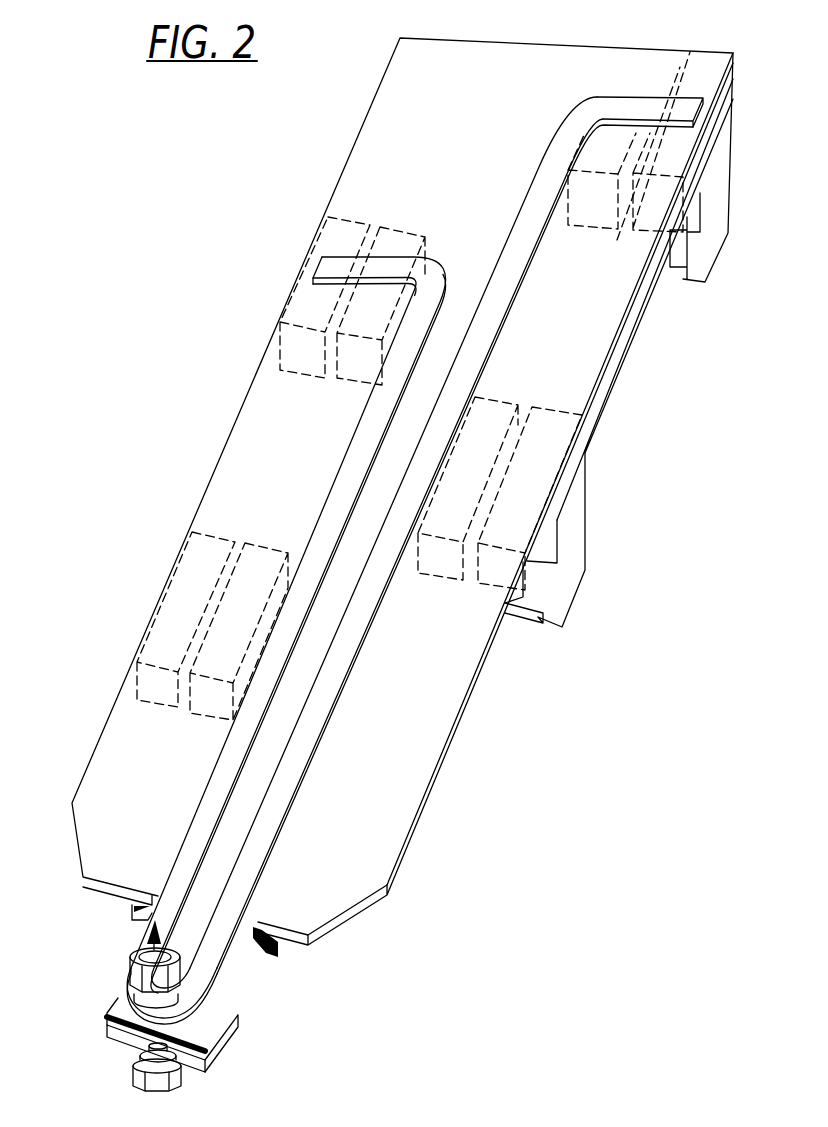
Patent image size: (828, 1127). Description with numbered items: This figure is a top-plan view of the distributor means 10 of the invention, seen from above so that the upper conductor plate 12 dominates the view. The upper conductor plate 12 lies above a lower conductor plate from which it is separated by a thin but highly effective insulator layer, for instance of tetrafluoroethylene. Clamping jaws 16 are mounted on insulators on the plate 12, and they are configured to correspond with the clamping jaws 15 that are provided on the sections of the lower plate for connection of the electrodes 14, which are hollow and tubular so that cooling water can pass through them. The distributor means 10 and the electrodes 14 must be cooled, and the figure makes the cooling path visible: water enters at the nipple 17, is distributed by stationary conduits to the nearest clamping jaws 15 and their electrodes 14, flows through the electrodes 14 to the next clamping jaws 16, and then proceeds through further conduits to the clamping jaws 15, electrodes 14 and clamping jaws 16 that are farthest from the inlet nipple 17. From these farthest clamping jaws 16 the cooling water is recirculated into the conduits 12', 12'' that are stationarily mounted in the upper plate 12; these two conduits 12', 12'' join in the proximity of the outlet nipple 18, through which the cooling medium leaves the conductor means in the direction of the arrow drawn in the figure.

The distributor means 10 is at (207, 313).
The upper conductor plate 12 is at (402, 497).
The conduit 12' is at (286, 640).
The conduit 12'' is at (446, 535).
The electrodes 14 is at (677, 270).
The clamping jaws 15 is at (253, 572).
The clamping jaws 16 is at (195, 583).
The nipple 17 is at (138, 1075).
The outlet nipple 18 is at (132, 972).